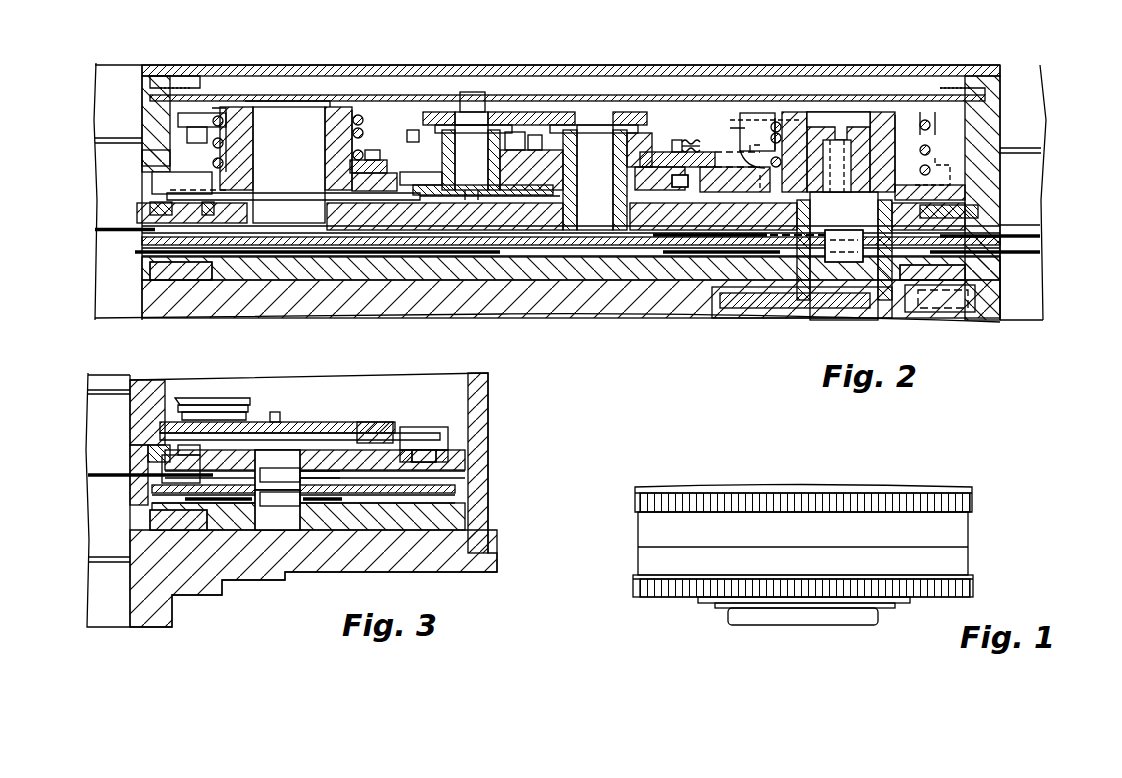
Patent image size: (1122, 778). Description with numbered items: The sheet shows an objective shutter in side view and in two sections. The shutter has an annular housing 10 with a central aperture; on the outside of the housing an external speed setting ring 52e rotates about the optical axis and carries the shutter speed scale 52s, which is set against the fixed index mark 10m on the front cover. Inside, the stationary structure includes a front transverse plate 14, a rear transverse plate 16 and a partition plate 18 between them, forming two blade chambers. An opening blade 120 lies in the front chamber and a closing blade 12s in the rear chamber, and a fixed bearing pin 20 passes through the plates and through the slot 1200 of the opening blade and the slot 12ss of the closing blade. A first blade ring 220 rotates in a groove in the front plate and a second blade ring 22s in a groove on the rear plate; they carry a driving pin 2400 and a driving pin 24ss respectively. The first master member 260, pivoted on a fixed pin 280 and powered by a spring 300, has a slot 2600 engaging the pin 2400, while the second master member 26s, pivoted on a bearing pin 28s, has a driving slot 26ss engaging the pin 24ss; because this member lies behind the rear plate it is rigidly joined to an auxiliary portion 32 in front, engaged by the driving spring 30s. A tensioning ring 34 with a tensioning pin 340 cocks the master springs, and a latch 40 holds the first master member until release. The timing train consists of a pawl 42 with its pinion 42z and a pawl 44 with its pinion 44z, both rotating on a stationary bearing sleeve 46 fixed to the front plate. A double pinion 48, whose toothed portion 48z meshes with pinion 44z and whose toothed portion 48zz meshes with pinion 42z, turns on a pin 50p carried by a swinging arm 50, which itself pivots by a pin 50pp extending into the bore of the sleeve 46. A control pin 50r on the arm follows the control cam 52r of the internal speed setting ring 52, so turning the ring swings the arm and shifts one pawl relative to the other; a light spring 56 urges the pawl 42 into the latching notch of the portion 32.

In FIG. 2, the housing 10 is at (368, 300).
In FIG. 3, the housing 10 is at (480, 408).
In FIG. 1, the housing 10 is at (700, 600).
In FIG. 1, the index mark 10m is at (800, 490).
In FIG. 2, the closing blade 12s is at (135, 252).
In FIG. 3, the closing blade 12s is at (332, 500).
In FIG. 3, the slot 12ss is at (252, 505).
In FIG. 2, the opening blade 120 is at (95, 229).
In FIG. 3, the opening blade 120 is at (113, 475).
In FIG. 3, the slot 1200 is at (255, 452).
In FIG. 2, the transverse plate 14 is at (233, 218).
In FIG. 3, the transverse plate 14 is at (455, 468).
In FIG. 2, the transverse plate 16 is at (325, 270).
In FIG. 3, the transverse plate 16 is at (453, 517).
In FIG. 2, the partition plate 18 is at (290, 243).
In FIG. 3, the partition plate 18 is at (433, 495).
In FIG. 3, the bearing pin 20 is at (285, 517).
In FIG. 2, the blade ring 220 is at (150, 210).
In FIG. 3, the blade ring 220 is at (150, 450).
In FIG. 2, the blade ring 22s is at (135, 280).
In FIG. 3, the blade ring 22s is at (150, 518).
In FIG. 2, the driving pin 2400 is at (175, 182).
In FIG. 3, the driving pin 2400 is at (182, 475).
In FIG. 2, the driving pin 24ss is at (965, 292).
In FIG. 2, the master member 260 is at (238, 118).
In FIG. 3, the master member 260 is at (370, 428).
In FIG. 2, the slot 2600 is at (168, 163).
In FIG. 2, the master member 26s is at (757, 302).
In FIG. 2, the driving slot 26ss is at (918, 310).
In FIG. 2, the fixed pin 280 is at (282, 117).
In FIG. 2, the bearing pin 28s is at (820, 283).
In FIG. 2, the spring 300 is at (208, 120).
In FIG. 2, the driving spring 30s is at (763, 125).
In FIG. 2, the auxiliary portion 32 is at (800, 125).
In FIG. 3, the tensioning ring 34 is at (447, 458).
In FIG. 3, the tensioning pin 340 is at (422, 437).
In FIG. 3, the latch 40 is at (318, 423).
In FIG. 2, the pawl 42 is at (702, 153).
In FIG. 2, the pinion 42z is at (655, 137).
In FIG. 2, the pawl 44 is at (418, 192).
In FIG. 2, the pinion 44z is at (677, 187).
In FIG. 2, the bearing sleeve 46 is at (565, 222).
In FIG. 2, the double pinion 48 is at (445, 180).
In FIG. 2, the toothed portion 48z is at (417, 160).
In FIG. 2, the toothed portion 48zz is at (413, 128).
In FIG. 2, the swinging arm 50 is at (520, 115).
In FIG. 2, the pin 50p is at (470, 180).
In FIG. 2, the pin 50pp is at (590, 140).
In FIG. 2, the control pin 50r is at (473, 95).
In FIG. 2, the speed setting ring 52 is at (340, 95).
In FIG. 1, the external speed setting ring 52e is at (960, 533).
In FIG. 2, the control cam 52r is at (435, 100).
In FIG. 1, the shutter speed scale 52s is at (822, 537).
In FIG. 2, the spring 56 is at (688, 140).